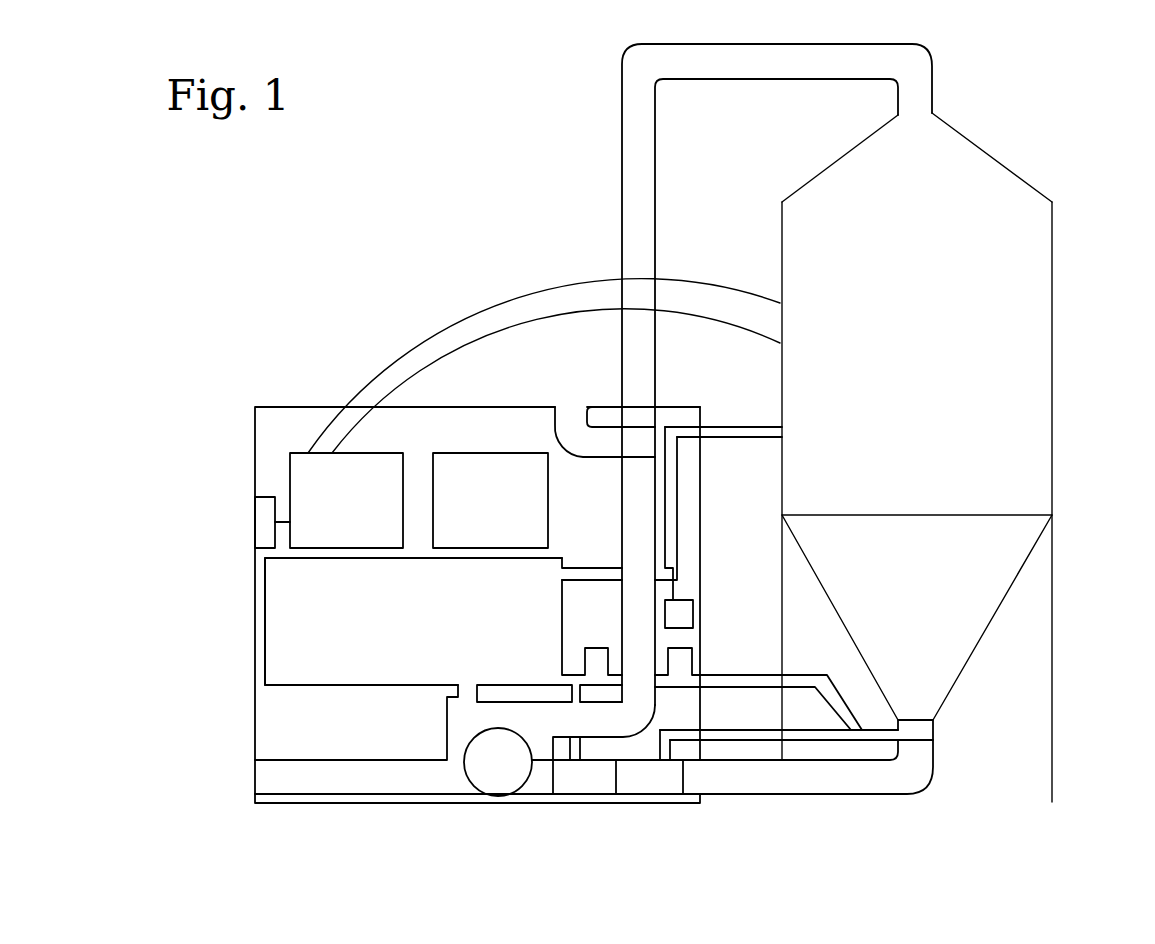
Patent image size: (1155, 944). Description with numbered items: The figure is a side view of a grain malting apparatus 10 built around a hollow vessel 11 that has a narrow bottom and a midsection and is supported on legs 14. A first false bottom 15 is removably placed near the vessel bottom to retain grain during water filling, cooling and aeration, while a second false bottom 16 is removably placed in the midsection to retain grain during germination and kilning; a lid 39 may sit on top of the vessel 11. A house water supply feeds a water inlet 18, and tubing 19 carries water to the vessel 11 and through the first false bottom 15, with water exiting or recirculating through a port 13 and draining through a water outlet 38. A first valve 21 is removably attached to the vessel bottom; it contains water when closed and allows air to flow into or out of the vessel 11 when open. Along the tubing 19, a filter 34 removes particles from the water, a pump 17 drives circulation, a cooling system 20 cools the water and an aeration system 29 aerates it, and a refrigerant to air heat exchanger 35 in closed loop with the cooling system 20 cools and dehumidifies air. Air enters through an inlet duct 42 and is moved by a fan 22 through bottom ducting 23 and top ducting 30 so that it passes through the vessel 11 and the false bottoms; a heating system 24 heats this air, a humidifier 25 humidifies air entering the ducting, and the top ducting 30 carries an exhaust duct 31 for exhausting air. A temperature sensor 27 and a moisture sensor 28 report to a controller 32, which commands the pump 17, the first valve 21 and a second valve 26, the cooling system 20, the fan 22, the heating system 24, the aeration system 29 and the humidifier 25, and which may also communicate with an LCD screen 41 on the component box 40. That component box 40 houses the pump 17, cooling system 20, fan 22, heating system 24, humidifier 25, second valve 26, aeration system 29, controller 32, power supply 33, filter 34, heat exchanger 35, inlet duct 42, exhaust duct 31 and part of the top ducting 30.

The apparatus 10 is at (490, 258).
The hollow vessel 11 is at (1062, 343).
The port 13 is at (791, 420).
The legs 14 is at (1055, 645).
The first false bottom 15 is at (920, 718).
The second false bottom 16 is at (1022, 515).
The pump 17 is at (592, 645).
The water inlet 18 is at (668, 797).
The tubing 19 is at (760, 457).
The cooling system 20 is at (413, 621).
The first valve 21 is at (930, 742).
The fan 22 is at (498, 762).
The bottom ducting 23 is at (900, 800).
The heating system 24 is at (604, 749).
The humidifier 25 is at (653, 777).
The second valve 26 is at (625, 457).
The temperature sensor 27 is at (778, 305).
The moisture sensor 28 is at (778, 350).
The aeration system 29 is at (688, 600).
The top ducting 30 is at (620, 200).
The exhaust duct 31 is at (575, 410).
The controller 32 is at (346, 500).
The power supply 33 is at (490, 500).
The filter 34 is at (700, 663).
The refrigerant to air heat exchanger 35 is at (549, 709).
The water outlet 38 is at (580, 797).
The lid 39 is at (988, 150).
The component box 40 is at (252, 628).
The LCD screen 41 is at (252, 522).
The inlet duct 42 is at (255, 777).